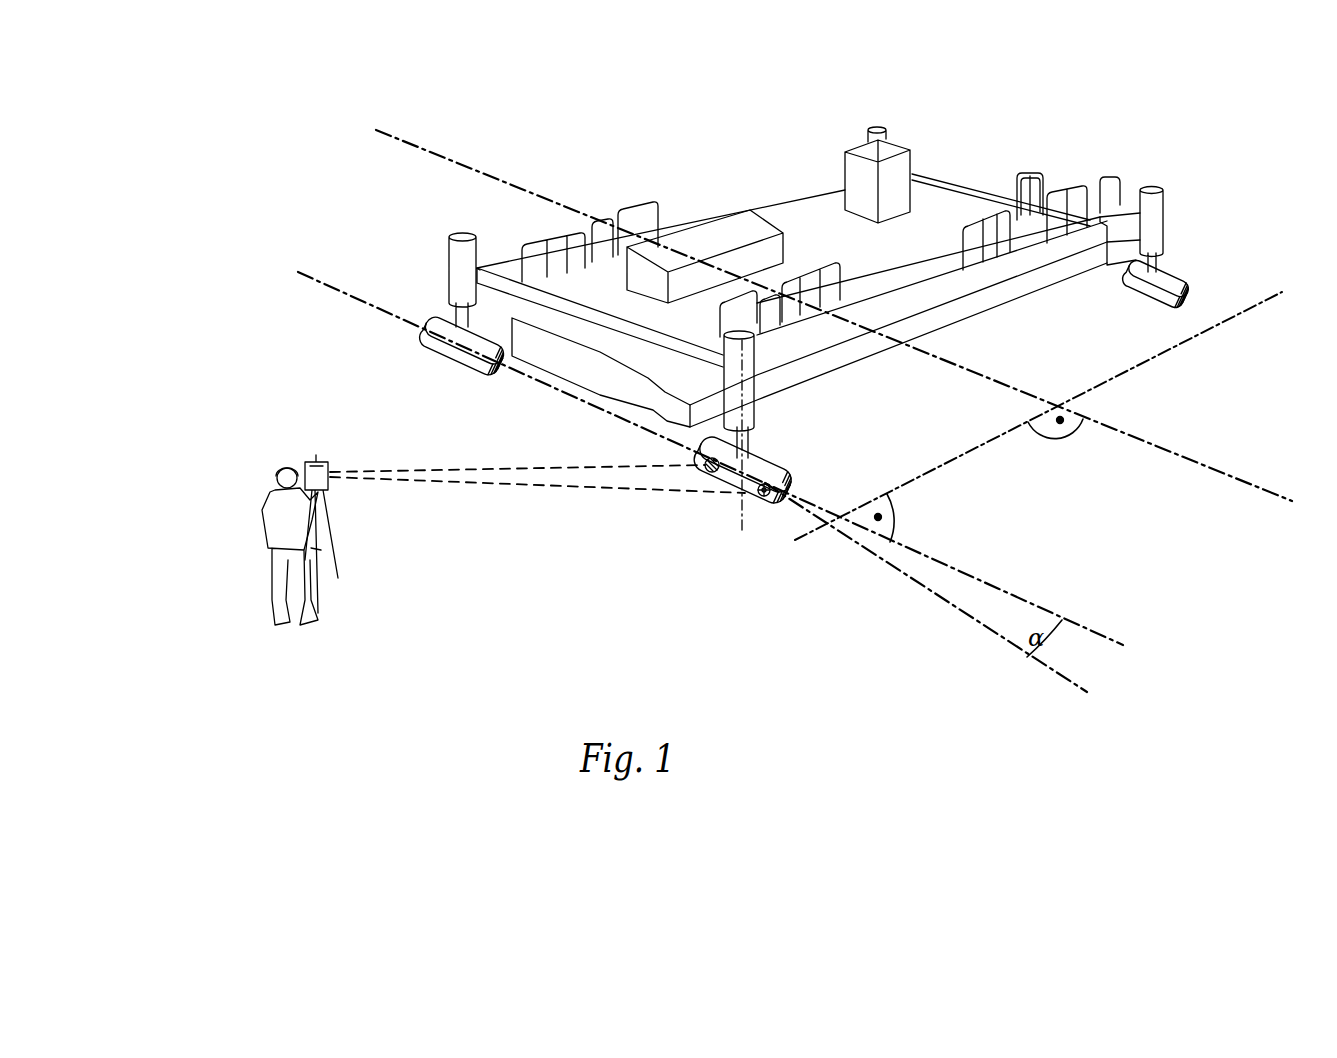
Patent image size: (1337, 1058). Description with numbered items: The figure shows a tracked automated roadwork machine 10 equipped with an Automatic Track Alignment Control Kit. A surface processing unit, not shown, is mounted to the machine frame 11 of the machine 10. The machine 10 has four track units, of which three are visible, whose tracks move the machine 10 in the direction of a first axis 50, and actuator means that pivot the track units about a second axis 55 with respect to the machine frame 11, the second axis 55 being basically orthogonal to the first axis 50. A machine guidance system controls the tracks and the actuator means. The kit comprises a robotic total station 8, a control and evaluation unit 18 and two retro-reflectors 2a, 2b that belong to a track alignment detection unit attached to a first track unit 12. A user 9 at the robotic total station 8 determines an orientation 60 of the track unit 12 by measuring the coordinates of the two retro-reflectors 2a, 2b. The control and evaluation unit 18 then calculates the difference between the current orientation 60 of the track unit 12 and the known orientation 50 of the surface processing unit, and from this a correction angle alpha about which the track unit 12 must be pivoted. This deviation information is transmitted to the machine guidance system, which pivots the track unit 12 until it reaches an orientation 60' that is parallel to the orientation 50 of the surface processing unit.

The tracked automated roadwork machine 10 is at (1034, 129).
The machine frame 11 is at (810, 225).
The track unit 12 is at (794, 454).
The control and evaluation unit 18 is at (877, 152).
The second axis 55 is at (743, 388).
The retro-reflector 2a is at (763, 500).
The retro-reflector 2b is at (690, 460).
The robotic total station 8 is at (328, 441).
The user 9 is at (255, 475).
The first axis 50 is at (1167, 448).
The orientation of the track unit 60 is at (926, 587).
The corrected orientation 60' is at (710, 458).